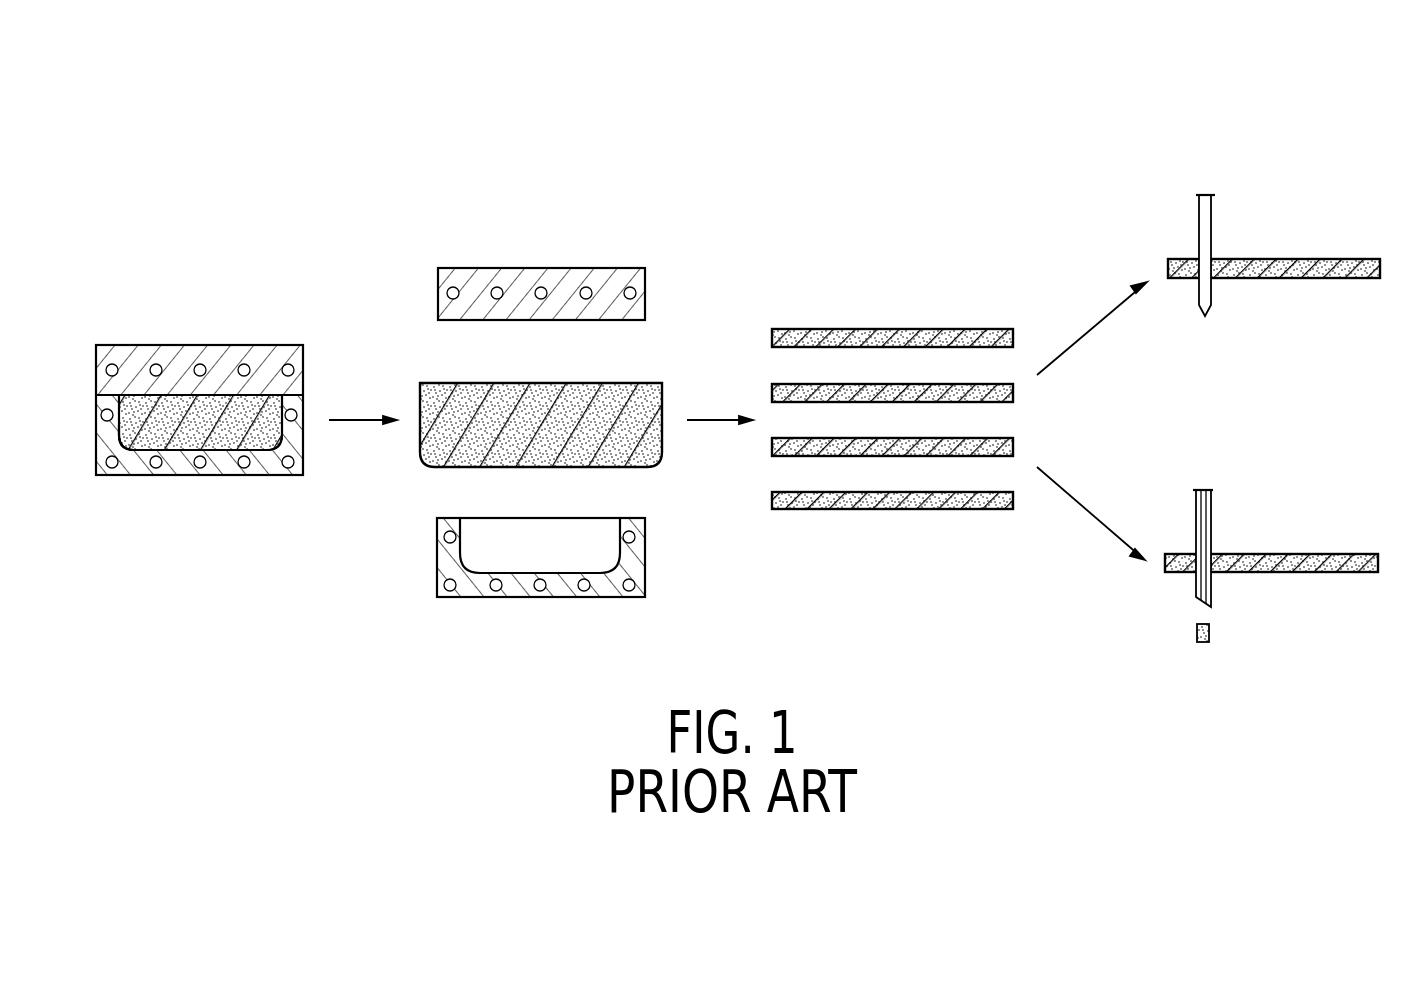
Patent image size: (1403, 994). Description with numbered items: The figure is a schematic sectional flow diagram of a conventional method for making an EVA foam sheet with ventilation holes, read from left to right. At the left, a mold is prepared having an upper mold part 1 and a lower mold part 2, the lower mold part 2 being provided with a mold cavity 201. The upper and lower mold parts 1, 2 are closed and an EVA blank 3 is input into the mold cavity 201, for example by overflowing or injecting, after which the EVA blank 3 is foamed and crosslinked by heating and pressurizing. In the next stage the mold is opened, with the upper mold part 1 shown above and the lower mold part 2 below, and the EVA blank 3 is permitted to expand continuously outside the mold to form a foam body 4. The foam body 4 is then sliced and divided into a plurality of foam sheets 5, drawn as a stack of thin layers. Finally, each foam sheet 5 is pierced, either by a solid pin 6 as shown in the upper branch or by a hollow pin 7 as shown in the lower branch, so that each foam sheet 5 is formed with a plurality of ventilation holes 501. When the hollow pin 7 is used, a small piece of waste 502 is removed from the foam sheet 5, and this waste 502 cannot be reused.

The upper mold part 1 is at (213, 334).
The lower mold part 2 is at (233, 485).
The EVA blank 3 is at (137, 455).
The mold cavity 201 is at (197, 450).
The foam body 4 is at (430, 374).
The foam sheet 5 is at (873, 321).
The ventilation hole 501 is at (1250, 258).
The solid pin 6 is at (1206, 182).
The hollow pin 7 is at (1203, 478).
The waste 502 is at (1196, 633).